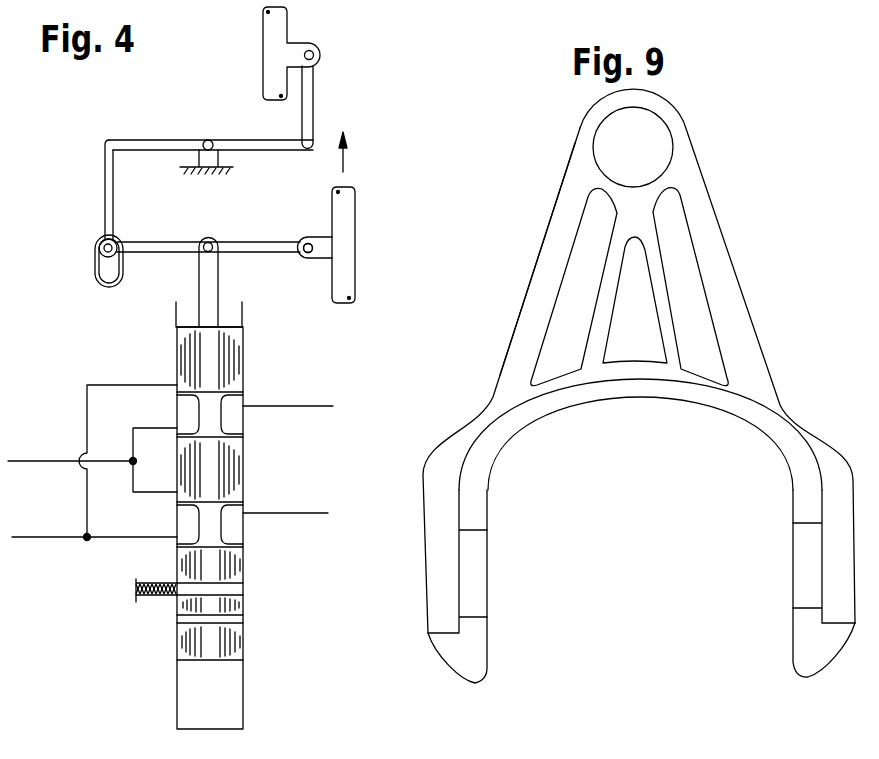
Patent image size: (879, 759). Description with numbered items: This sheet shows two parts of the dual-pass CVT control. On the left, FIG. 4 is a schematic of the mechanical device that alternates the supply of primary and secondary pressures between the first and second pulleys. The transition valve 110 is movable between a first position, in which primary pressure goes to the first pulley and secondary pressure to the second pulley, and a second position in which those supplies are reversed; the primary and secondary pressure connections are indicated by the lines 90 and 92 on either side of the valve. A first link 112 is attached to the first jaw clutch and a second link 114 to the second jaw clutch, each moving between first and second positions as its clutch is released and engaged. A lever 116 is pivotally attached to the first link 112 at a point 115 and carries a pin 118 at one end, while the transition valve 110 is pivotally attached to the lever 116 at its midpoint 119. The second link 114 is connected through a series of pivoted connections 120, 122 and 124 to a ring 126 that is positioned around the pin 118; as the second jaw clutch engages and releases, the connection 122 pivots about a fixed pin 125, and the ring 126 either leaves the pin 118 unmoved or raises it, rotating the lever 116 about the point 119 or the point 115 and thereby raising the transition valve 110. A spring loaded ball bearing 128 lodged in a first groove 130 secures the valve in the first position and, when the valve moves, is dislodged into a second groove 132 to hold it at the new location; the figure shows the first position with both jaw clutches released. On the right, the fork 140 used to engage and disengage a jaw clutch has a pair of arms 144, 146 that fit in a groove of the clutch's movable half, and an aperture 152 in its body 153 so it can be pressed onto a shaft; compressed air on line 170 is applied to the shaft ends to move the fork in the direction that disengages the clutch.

In FIG. 4, the primary pressure line 90 is at (24, 461).
In FIG. 4, the secondary pressure line 92 is at (27, 537).
In FIG. 4, the transition valve 110 is at (253, 371).
In FIG. 4, the first link 112 is at (343, 231).
In FIG. 4, the second link 114 is at (272, 52).
In FIG. 4, the pivot point 115 is at (307, 258).
In FIG. 4, the lever 116 is at (248, 241).
In FIG. 4, the pin 118 is at (101, 238).
In FIG. 4, the midpoint 119 is at (211, 238).
In FIG. 4, the pivoted connection 120 is at (316, 102).
In FIG. 4, the pivoted connection 122 is at (146, 140).
In FIG. 4, the pivoted connection 124 is at (105, 167).
In FIG. 4, the pin 125 is at (212, 140).
In FIG. 4, the ring 126 is at (95, 283).
In FIG. 4, the spring loaded ball bearing 128 is at (152, 608).
In FIG. 4, the first groove 130 is at (245, 589).
In FIG. 4, the second groove 132 is at (245, 620).
In FIG. 9, the fork 140 is at (717, 203).
In FIG. 9, the arm 144 is at (453, 655).
In FIG. 9, the arm 146 is at (805, 652).
In FIG. 9, the aperture 152 is at (648, 128).
In FIG. 9, the body 153 is at (553, 260).
In FIG. 9, the compressed air line 170 is at (516, 758).